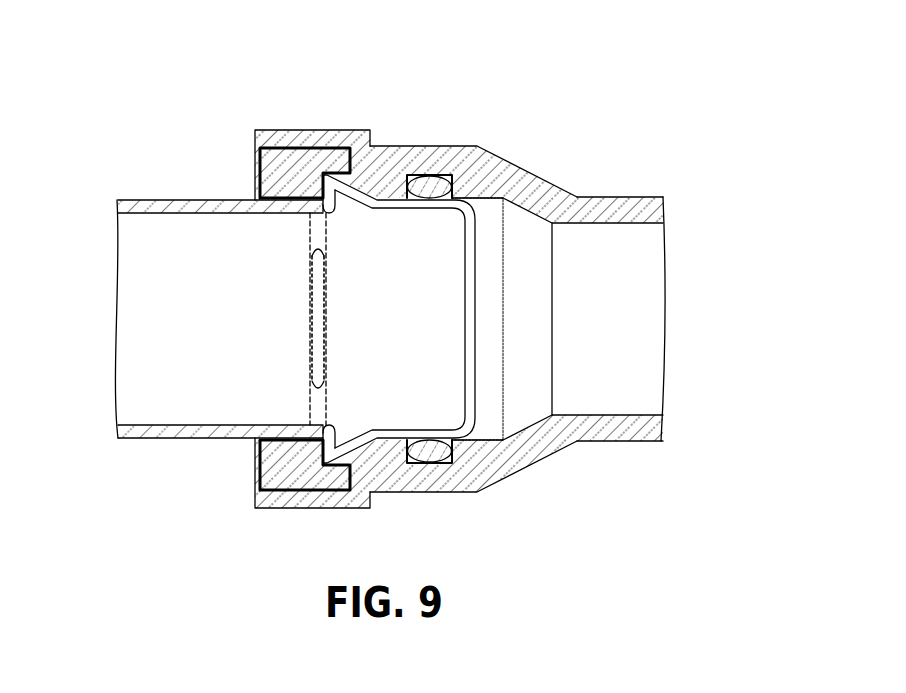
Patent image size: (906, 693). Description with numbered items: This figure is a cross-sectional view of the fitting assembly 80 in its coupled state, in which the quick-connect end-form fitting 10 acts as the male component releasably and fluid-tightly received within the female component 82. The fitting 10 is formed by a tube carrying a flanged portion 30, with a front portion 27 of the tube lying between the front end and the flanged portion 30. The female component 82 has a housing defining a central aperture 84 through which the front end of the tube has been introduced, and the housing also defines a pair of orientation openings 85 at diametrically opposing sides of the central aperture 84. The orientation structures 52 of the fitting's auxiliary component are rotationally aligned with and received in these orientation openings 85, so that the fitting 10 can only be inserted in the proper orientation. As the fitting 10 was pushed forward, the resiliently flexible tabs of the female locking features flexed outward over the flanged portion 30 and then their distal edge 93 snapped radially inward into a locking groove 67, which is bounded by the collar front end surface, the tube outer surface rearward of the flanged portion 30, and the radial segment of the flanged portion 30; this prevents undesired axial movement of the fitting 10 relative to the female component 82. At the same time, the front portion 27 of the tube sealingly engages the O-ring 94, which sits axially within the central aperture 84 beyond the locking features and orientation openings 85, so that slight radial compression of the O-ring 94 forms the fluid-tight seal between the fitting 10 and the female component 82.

The quick-connect end-form fitting 10 is at (122, 174).
The front portion 27 is at (471, 442).
The flanged portion 30 is at (363, 174).
The orientation structures 52 is at (300, 148).
The locking groove 67 is at (308, 233).
The fitting assembly 80 is at (460, 289).
The female component 82 is at (520, 155).
The central aperture 84 is at (587, 239).
The orientation openings 85 is at (257, 163).
The distal edge 93 is at (306, 356).
The O-ring 94 is at (432, 465).